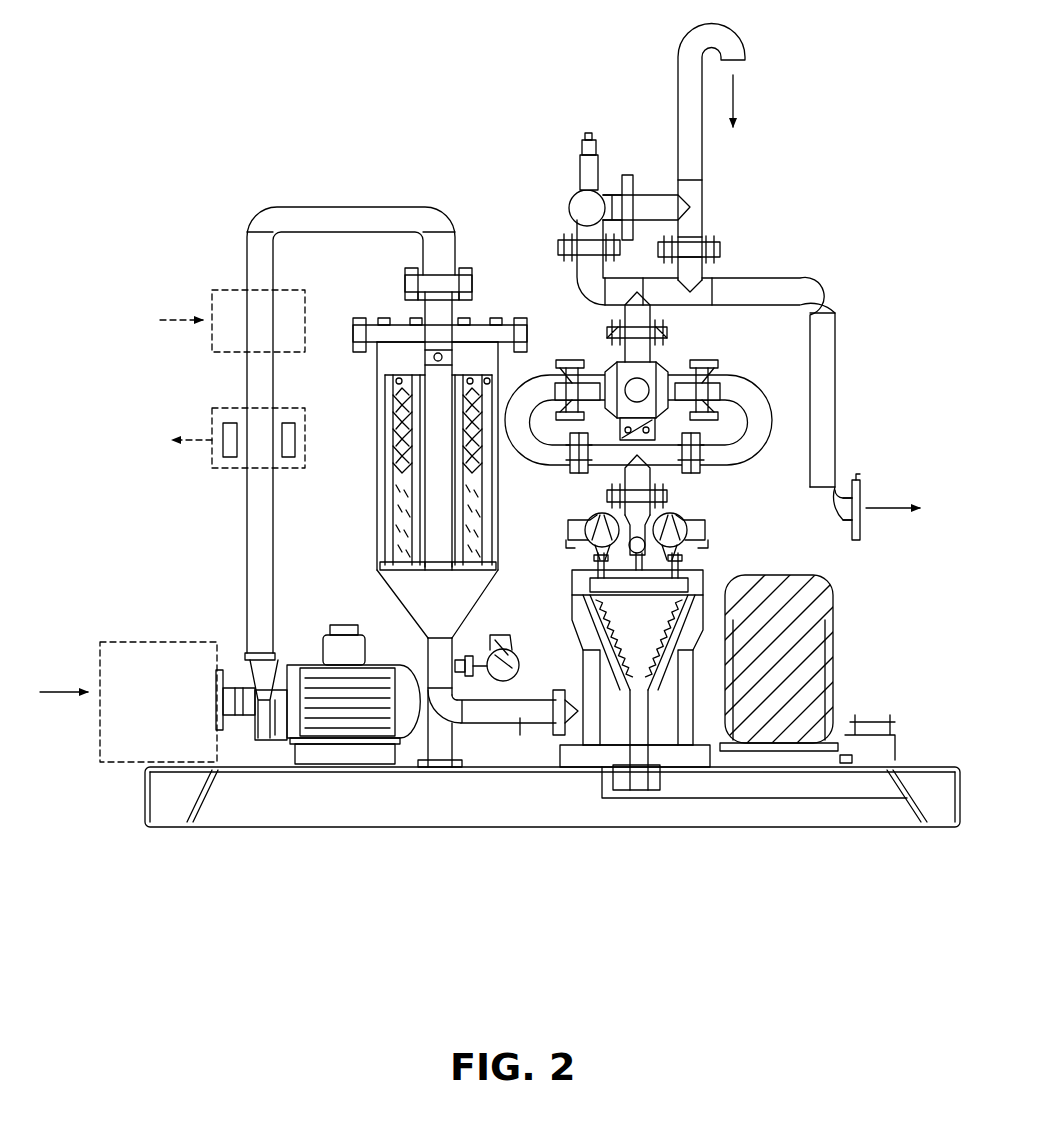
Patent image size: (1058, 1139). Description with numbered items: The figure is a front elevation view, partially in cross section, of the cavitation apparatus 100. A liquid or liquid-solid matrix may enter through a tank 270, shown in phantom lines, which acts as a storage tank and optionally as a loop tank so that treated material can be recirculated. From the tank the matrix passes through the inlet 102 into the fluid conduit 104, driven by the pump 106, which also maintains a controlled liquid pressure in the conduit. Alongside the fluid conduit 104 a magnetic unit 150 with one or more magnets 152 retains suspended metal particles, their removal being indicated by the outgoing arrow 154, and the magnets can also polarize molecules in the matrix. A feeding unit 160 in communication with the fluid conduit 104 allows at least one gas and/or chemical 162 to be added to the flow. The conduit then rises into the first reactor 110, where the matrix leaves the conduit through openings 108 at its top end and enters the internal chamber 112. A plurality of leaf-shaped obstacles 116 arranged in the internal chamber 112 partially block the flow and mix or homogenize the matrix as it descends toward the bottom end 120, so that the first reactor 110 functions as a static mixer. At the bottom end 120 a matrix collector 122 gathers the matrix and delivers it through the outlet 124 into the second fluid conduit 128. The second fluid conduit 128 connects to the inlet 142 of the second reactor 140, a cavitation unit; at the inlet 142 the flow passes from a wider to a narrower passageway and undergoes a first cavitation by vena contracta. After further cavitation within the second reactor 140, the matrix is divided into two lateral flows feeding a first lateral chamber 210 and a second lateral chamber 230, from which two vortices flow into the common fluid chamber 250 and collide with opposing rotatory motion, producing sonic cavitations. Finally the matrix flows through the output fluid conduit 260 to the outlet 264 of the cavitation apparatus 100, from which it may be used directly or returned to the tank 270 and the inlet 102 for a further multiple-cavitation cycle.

The cavitation apparatus 100 is at (292, 115).
The inlet 102 is at (215, 700).
The fluid conduit 104 is at (247, 515).
The pump 106 is at (300, 668).
The openings 108 is at (440, 352).
The first reactor 110 is at (377, 480).
The internal chamber 112 is at (408, 361).
The obstacles 116 is at (385, 545).
The bottom end 120 is at (400, 586).
The matrix collector 122 is at (425, 600).
The outlet 124 is at (440, 640).
The second fluid conduit 128 is at (520, 728).
The second reactor 140 is at (575, 610).
The inlet 142 is at (556, 700).
The magnetic unit 150 is at (230, 408).
The magnets 152 is at (227, 458).
The outgoing arrow 154 is at (192, 438).
The feeding unit 160 is at (230, 290).
The gas and/or chemical 162 is at (192, 318).
The first lateral chamber 210 is at (581, 353).
The second lateral chamber 230 is at (734, 359).
The common fluid chamber 250 is at (672, 372).
The output fluid conduit 260 is at (830, 290).
The outlet 264 is at (860, 500).
The tank 270 is at (162, 642).